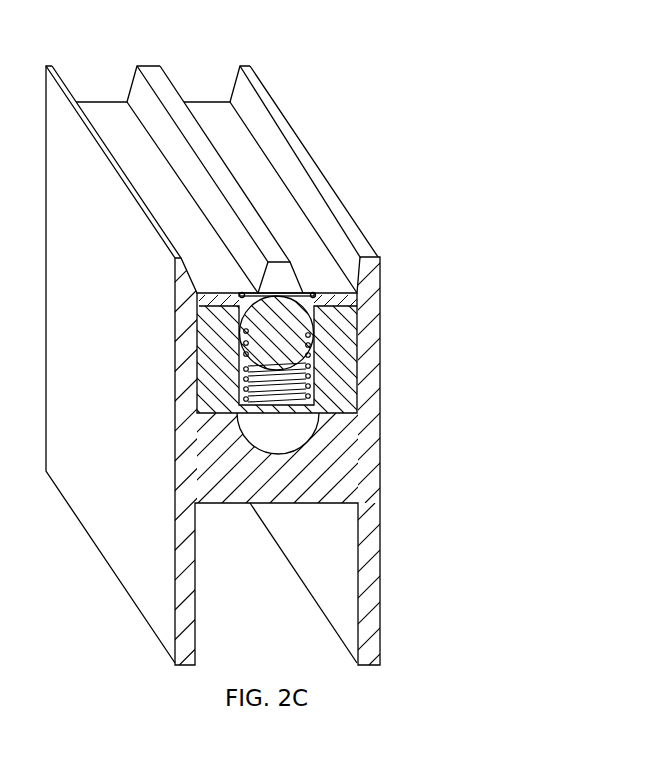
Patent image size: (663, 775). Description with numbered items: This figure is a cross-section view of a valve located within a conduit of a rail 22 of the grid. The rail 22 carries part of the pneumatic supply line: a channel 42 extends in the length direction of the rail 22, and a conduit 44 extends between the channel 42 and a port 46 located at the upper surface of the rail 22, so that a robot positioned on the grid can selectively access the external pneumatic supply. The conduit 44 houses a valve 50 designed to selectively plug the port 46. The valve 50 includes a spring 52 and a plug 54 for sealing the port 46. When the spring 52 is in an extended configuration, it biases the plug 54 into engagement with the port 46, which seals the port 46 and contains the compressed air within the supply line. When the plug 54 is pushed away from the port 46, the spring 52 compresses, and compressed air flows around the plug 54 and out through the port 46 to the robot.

The rail 22 is at (438, 372).
The channel 42 is at (287, 438).
The conduit 44 is at (245, 367).
The port 46 is at (240, 293).
The valve 50 is at (339, 335).
The spring 52 is at (238, 396).
The plug 54 is at (263, 292).